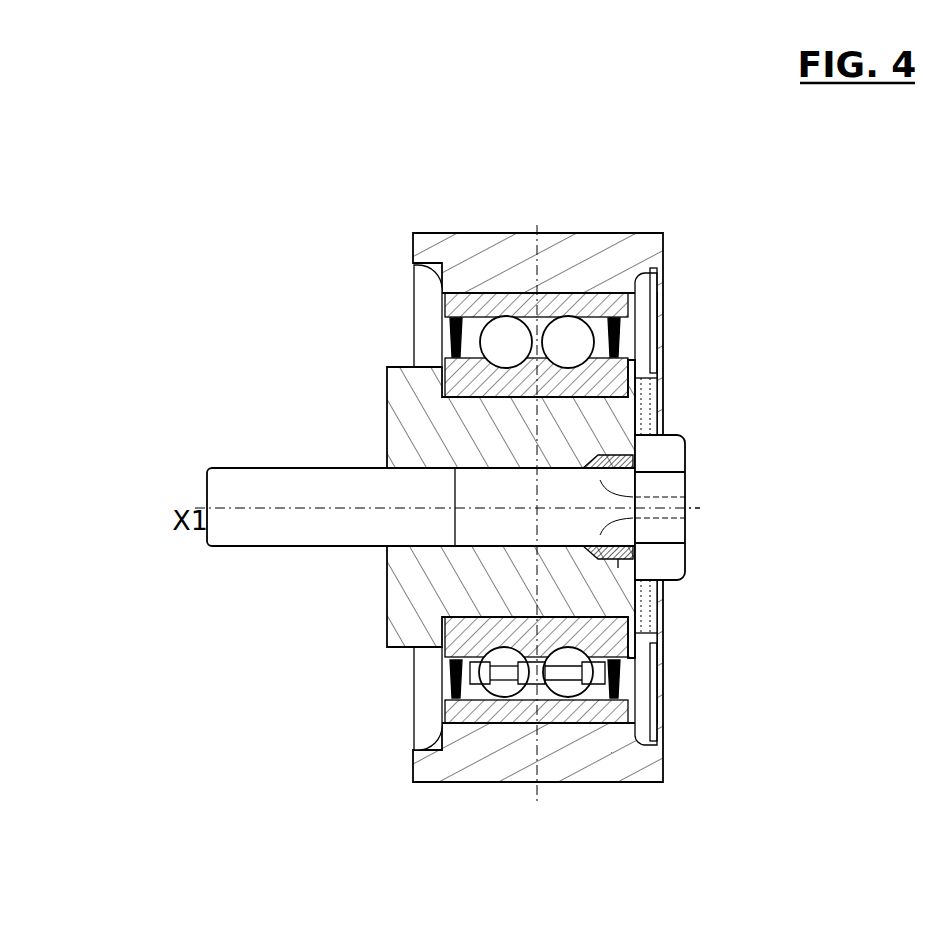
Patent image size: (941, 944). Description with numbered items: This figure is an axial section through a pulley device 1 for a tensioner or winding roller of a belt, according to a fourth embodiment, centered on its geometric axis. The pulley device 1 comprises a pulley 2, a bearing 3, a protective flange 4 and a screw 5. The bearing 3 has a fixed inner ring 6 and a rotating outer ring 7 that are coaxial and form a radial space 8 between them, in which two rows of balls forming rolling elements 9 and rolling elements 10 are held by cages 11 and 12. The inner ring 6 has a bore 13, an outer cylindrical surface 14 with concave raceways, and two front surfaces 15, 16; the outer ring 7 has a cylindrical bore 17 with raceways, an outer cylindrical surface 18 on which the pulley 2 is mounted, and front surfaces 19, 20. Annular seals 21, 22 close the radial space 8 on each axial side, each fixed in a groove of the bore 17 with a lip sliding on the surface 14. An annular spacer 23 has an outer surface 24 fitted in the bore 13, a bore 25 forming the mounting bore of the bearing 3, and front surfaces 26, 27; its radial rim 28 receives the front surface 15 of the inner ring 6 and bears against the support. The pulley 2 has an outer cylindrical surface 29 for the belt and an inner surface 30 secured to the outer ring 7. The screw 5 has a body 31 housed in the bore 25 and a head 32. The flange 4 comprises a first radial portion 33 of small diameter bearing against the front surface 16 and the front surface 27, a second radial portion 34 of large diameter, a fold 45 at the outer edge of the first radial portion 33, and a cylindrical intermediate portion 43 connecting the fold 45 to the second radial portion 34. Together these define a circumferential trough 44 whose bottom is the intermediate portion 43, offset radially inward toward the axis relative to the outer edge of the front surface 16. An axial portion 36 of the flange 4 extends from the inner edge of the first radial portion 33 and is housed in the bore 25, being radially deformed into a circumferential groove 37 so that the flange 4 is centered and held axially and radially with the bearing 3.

The pulley device 1 is at (265, 360).
The pulley 2 is at (437, 229).
The bearing 3 is at (432, 317).
The protective flange 4 is at (661, 722).
The screw 5 is at (233, 557).
The fixed inner ring 6 is at (480, 381).
The rotating outer ring 7 is at (497, 786).
The radial space 8 is at (533, 290).
The rolling elements 9 is at (536, 345).
The rolling elements 10 is at (568, 342).
The cage 11 is at (480, 768).
The cage 12 is at (548, 786).
The bore 13 is at (470, 416).
The outer cylindrical surface 14 is at (470, 680).
The front surface 15 is at (480, 652).
The front surface 16 is at (660, 656).
The cylindrical bore 17 is at (452, 340).
The outer cylindrical surface 18 is at (485, 270).
The front surface 19 is at (440, 286).
The front surface 20 is at (668, 270).
The annular seal 21 is at (462, 722).
The annular seal 22 is at (626, 768).
The spacer 23 is at (383, 600).
The outer surface 24 is at (470, 641).
The bore 25 is at (430, 478).
The front surface 26 is at (387, 560).
The front surface 27 is at (655, 618).
The radial rim 28 is at (387, 449).
The outer cylindrical surface 29 is at (520, 786).
The inner surface 30 is at (613, 318).
The body 31 is at (207, 492).
The head 32 is at (668, 573).
The first radial portion 33 is at (650, 400).
The second radial portion 34 is at (660, 330).
The axial portion 36 is at (606, 497).
The circumferential groove 37 is at (606, 553).
The intermediate portion 43 is at (641, 390).
The trough 44 is at (664, 341).
The fold 45 is at (624, 285).